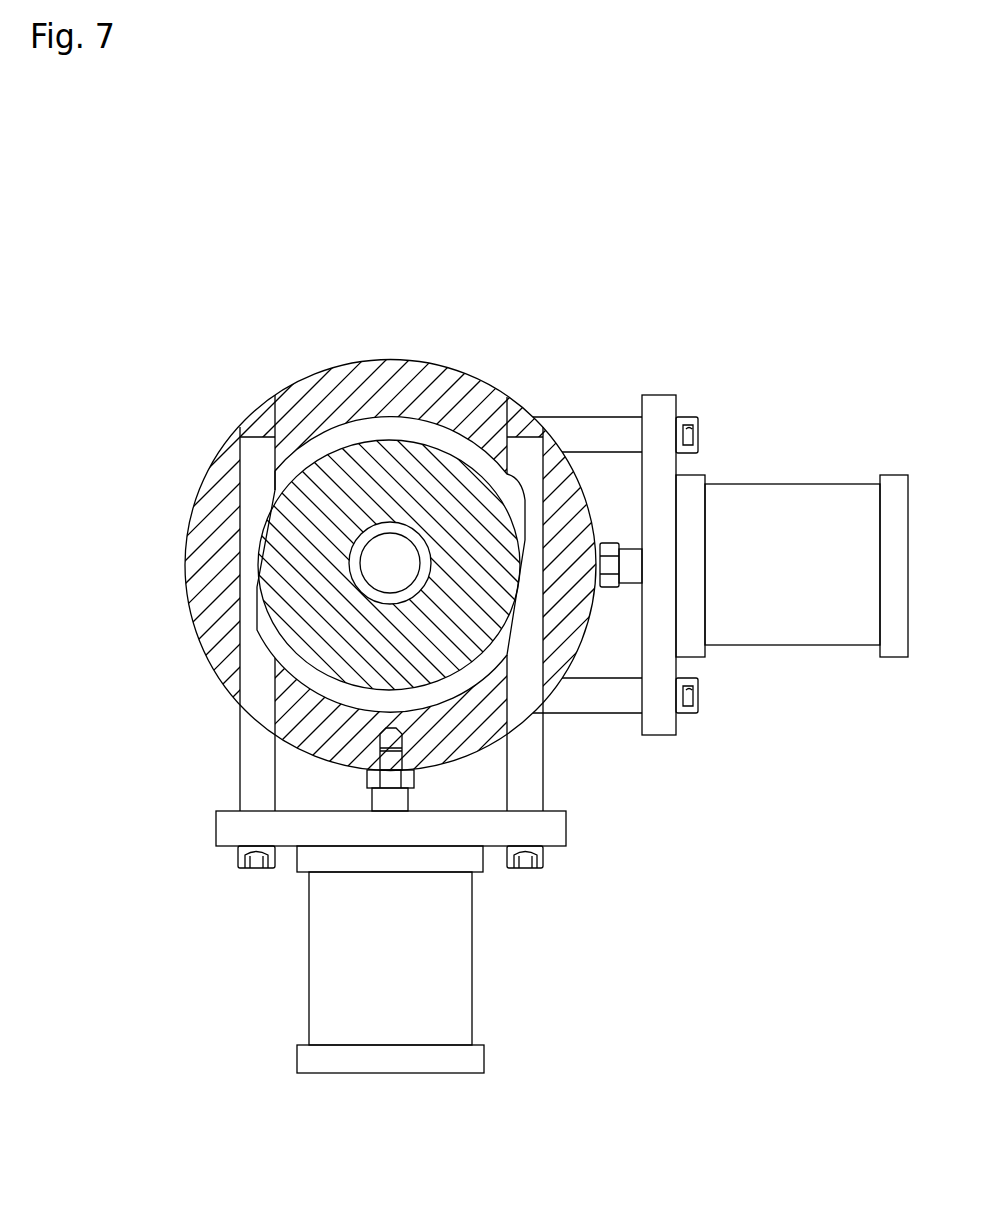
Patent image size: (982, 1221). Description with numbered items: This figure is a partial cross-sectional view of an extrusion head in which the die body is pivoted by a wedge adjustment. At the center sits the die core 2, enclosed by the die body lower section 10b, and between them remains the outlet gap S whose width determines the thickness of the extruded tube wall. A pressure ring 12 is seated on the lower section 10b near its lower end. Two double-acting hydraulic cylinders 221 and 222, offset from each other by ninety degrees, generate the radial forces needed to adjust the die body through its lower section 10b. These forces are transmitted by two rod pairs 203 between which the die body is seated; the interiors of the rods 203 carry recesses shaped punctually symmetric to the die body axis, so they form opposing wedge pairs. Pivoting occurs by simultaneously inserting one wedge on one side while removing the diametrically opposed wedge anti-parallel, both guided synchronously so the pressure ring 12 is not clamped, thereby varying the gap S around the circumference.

The pressure ring 12 is at (322, 397).
The rod pairs 203 is at (525, 458).
The die body lower section 10b is at (440, 472).
The die core 2 is at (373, 572).
The outlet gap S is at (423, 580).
The double-acting hydraulic cylinder 221 is at (785, 508).
The double-acting hydraulic cylinder 222 is at (448, 969).